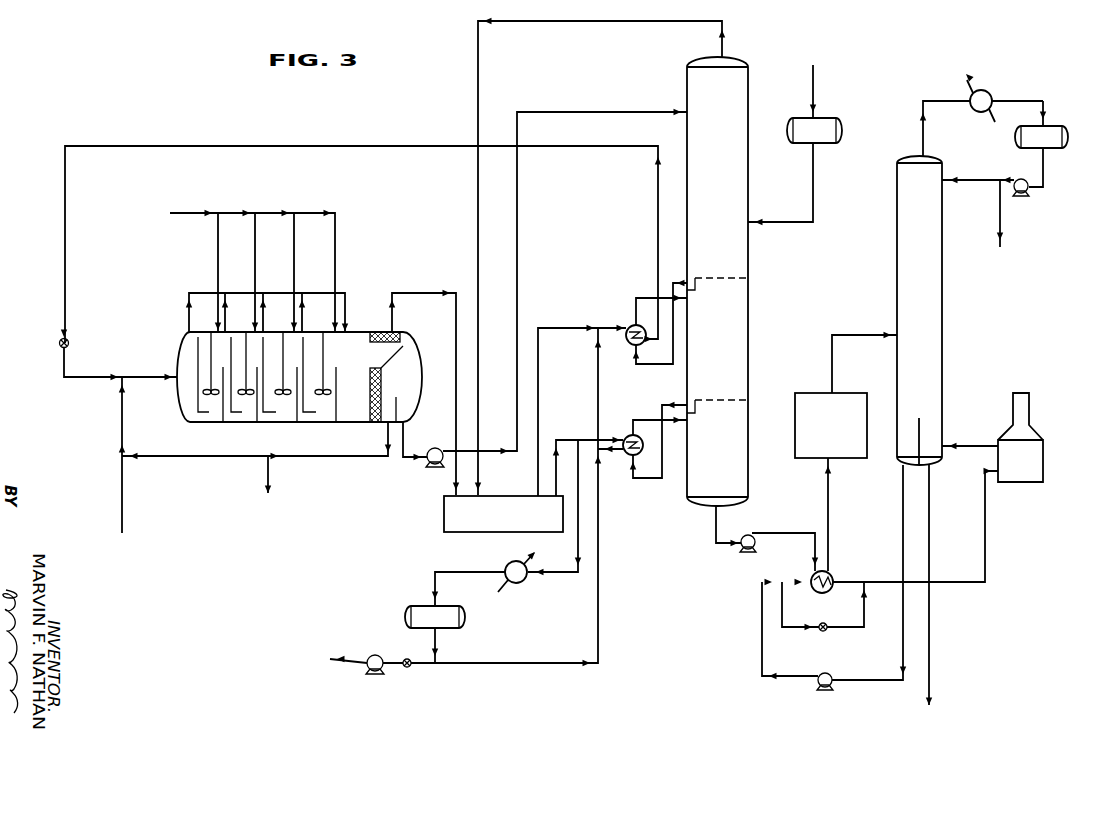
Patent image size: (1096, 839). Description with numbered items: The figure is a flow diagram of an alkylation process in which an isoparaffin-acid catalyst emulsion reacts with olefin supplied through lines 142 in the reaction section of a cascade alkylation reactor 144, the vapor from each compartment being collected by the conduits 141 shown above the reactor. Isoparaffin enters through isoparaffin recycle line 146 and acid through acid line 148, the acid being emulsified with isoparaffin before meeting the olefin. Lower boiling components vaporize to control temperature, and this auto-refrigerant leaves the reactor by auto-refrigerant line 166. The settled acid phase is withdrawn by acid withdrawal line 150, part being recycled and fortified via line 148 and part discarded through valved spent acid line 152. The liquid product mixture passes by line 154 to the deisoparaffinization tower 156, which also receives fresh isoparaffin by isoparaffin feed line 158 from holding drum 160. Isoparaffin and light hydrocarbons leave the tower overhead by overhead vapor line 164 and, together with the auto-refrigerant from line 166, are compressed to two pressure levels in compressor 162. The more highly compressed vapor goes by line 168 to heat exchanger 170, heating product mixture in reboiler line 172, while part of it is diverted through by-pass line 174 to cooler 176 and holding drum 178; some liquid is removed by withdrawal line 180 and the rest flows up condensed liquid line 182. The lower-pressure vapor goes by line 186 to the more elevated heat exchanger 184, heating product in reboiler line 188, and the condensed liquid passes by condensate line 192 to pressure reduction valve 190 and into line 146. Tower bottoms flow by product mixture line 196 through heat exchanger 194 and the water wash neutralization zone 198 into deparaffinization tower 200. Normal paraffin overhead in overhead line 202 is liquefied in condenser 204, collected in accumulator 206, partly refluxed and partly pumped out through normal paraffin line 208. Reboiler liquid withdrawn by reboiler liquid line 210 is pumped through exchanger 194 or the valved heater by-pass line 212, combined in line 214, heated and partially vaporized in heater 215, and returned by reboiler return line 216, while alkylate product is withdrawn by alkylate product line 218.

The recycle conduits to reactor compartments 141 is at (357, 299).
The olefin lines 142 is at (206, 212).
The cascade alkylation reactor 144 is at (177, 356).
The isoparaffin recycle line 146 is at (88, 378).
The acid line 148 is at (120, 509).
The acid withdrawal line 150 is at (178, 458).
The valved spent acid line 152 is at (270, 470).
The liquid product line 154 is at (435, 449).
The deisoparaffinization tower 156 is at (748, 292).
The isoparaffin feed line 158 is at (815, 100).
The holding drum 160 is at (822, 143).
The compressor 162 is at (443, 520).
The overhead vapor line 164 is at (626, 21).
The auto-refrigerant line 166 is at (424, 383).
The higher-pressure vapor line 168 is at (572, 438).
The heat exchanger 170 is at (627, 433).
The reboiler line 172 is at (645, 480).
The by-pass line 174 is at (435, 584).
The cooler 176 is at (507, 565).
The holding drum 178 is at (465, 618).
The withdrawal line 180 is at (362, 648).
The condensed liquid line 182 is at (544, 664).
The heat exchanger 184 is at (628, 319).
The lower-pressure vapor line 186 is at (538, 468).
The reboiler line 188 is at (651, 365).
The pressure reduction valve 190 is at (59, 343).
The condensate line 192 is at (170, 146).
The heat exchanger 194 is at (833, 573).
The product mixture line 196 is at (714, 524).
The neutralization zone 198 is at (806, 460).
The deparaffinization tower 200 is at (942, 318).
The overhead line 202 is at (937, 99).
The condenser 204 is at (991, 94).
The accumulator 206 is at (1053, 129).
The normal paraffin line 208 is at (1001, 213).
The reboiler liquid line 210 is at (781, 678).
The valved heater by-pass line 212 is at (795, 629).
The combined reboiler line 214 is at (986, 562).
The heater 215 is at (1029, 477).
The reboiler return line 216 is at (974, 444).
The alkylate product line 218 is at (930, 636).